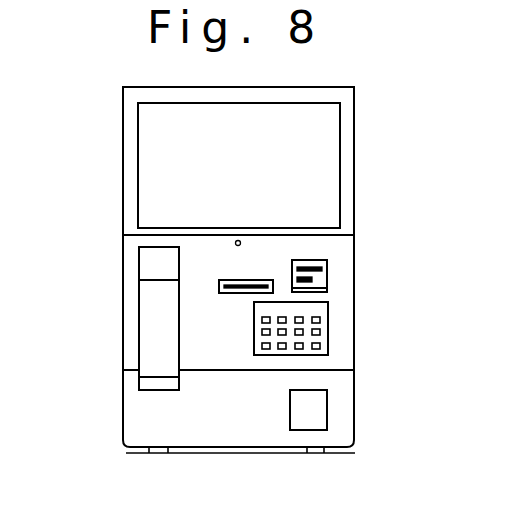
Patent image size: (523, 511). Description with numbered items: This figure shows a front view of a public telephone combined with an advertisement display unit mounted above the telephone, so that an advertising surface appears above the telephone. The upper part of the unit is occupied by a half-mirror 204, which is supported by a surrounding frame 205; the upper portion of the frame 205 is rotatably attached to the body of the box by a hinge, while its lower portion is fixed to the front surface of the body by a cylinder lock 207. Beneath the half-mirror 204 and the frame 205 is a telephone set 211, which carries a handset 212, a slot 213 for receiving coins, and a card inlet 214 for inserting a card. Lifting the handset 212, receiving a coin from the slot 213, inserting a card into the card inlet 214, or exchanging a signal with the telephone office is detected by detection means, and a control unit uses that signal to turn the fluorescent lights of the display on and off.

The half-mirror 204 is at (318, 182).
The frame 205 is at (130, 160).
The cylinder lock 207 is at (236, 240).
The telephone set 211 is at (141, 409).
The handset 212 is at (157, 331).
The slot 213 is at (318, 263).
The card inlet 214 is at (262, 280).